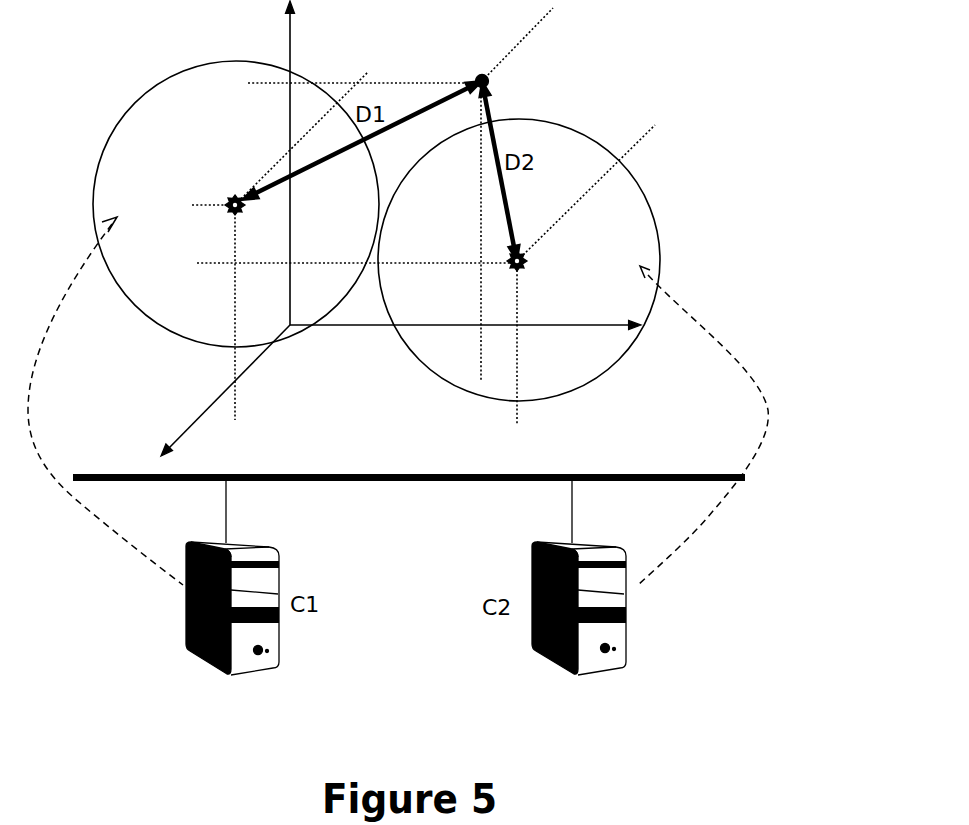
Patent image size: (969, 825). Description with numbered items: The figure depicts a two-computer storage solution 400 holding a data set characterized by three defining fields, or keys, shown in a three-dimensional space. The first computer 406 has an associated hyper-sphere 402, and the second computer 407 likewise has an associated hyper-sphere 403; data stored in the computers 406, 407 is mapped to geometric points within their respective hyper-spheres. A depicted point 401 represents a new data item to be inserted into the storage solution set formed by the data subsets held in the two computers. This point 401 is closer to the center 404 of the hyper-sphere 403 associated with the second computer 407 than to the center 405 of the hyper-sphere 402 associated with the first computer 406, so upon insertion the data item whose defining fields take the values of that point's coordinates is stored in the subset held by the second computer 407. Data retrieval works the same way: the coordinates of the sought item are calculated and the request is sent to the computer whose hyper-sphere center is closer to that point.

The two-computer storage solution 400 is at (710, 274).
The point 401 is at (492, 86).
The hyper-sphere 402 is at (118, 126).
The hyper-sphere 403 is at (645, 193).
The center 404 is at (526, 261).
The center 405 is at (233, 192).
The computer C1 406 is at (187, 613).
The computer C2 407 is at (613, 612).